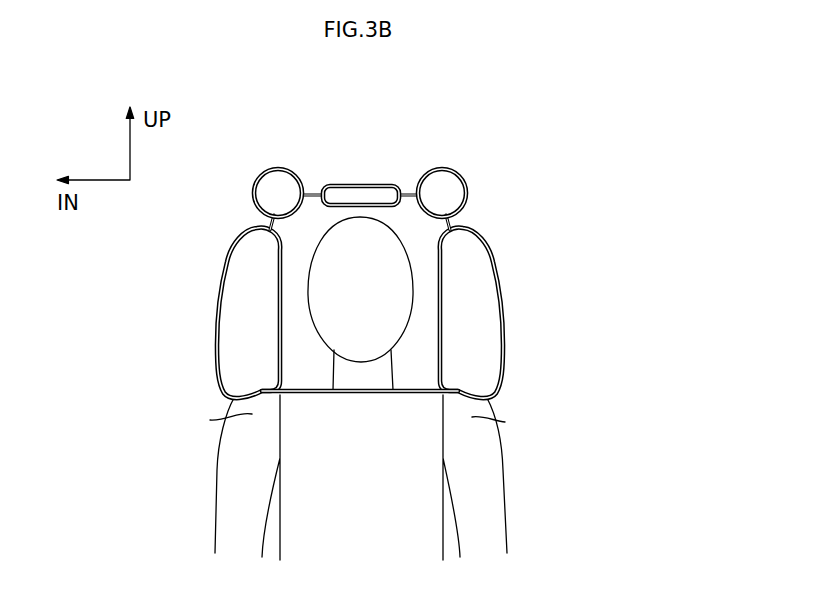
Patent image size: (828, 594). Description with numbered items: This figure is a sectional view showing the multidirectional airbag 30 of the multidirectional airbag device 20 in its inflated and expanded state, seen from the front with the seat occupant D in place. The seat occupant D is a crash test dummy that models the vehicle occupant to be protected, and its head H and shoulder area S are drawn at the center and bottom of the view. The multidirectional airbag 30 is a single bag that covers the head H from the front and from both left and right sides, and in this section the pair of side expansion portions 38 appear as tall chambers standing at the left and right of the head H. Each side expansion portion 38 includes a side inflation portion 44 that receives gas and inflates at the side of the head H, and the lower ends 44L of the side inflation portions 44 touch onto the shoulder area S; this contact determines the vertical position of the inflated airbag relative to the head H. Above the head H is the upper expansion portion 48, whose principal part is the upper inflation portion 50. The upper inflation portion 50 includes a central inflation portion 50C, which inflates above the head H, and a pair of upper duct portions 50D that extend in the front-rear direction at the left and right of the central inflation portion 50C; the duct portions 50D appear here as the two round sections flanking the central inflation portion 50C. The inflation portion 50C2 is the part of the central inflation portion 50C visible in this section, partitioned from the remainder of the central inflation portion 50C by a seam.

The multidirectional airbag device 20 is at (383, 312).
The multidirectional airbag 30 is at (383, 312).
The side expansion portion 38 is at (361, 339).
The side inflation portion 44 is at (237, 342).
The lower end of side inflation portion 44L is at (250, 396).
The upper expansion portion 48 is at (443, 144).
The upper inflation portion 50 is at (443, 144).
The central inflation portion 50C is at (384, 147).
The inflation portion 50C2 is at (345, 178).
The upper duct portion 50D is at (275, 182).
The head area H is at (390, 240).
The shoulder area S is at (210, 420).
The dummy D is at (368, 388).